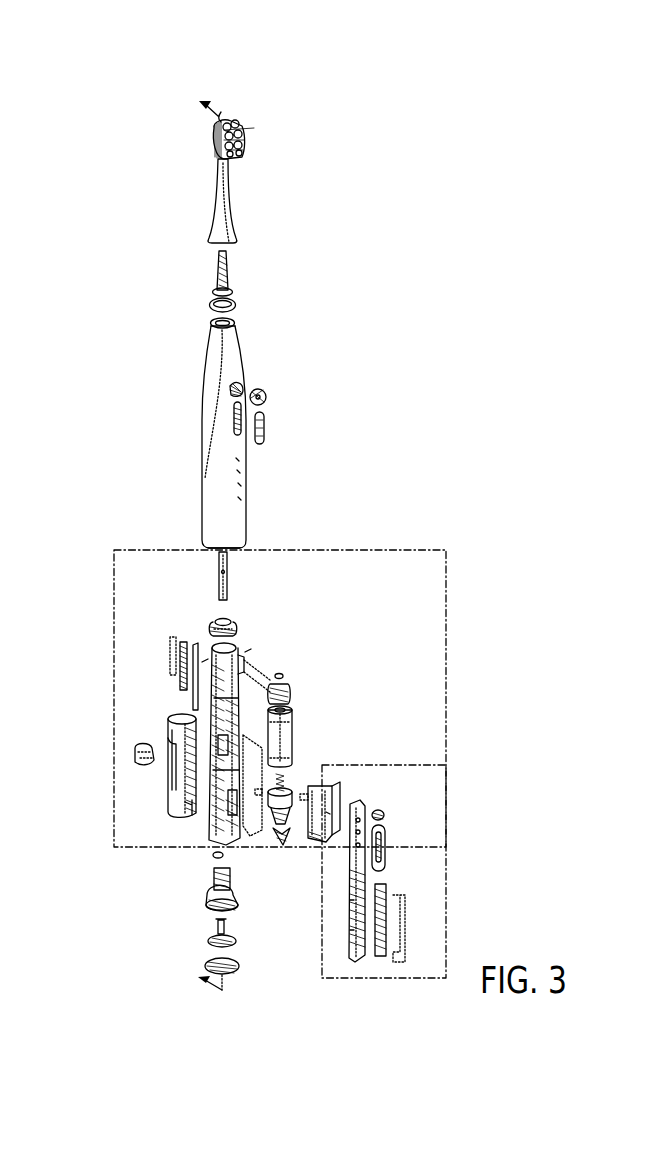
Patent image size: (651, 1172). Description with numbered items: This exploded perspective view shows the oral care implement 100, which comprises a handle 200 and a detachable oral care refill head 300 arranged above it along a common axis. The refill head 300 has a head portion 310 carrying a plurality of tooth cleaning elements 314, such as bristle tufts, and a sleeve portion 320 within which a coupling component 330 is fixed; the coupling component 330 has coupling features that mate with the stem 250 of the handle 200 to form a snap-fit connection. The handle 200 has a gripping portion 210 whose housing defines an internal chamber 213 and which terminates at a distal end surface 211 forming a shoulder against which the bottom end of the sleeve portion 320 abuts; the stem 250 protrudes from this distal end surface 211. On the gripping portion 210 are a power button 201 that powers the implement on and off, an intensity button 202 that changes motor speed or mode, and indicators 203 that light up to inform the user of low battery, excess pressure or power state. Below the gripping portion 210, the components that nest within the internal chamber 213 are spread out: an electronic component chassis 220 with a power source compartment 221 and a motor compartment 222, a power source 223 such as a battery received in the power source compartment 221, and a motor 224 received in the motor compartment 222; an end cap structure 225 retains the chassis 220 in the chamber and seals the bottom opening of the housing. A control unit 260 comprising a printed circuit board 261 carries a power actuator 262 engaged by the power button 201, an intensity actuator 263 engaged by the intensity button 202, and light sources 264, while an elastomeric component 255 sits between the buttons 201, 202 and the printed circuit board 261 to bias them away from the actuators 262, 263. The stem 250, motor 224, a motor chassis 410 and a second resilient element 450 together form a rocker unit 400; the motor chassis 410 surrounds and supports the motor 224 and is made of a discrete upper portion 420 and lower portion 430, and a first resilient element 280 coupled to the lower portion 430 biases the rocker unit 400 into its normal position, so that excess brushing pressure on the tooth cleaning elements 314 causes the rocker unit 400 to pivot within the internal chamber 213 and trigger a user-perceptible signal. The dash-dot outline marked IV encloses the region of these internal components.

The oral care implement 100 is at (416, 268).
The handle 200 is at (121, 467).
The power button 201 is at (266, 397).
The intensity button 202 is at (265, 430).
The indicators 203 is at (248, 468).
The gripping portion 210 is at (214, 410).
The distal end surface 211 is at (212, 470).
The internal chamber 213 is at (206, 549).
The electronic component chassis 220 is at (250, 713).
The power source compartment 221 is at (206, 785).
The motor compartment 222 is at (240, 663).
The power source 223 is at (176, 797).
The motor 224 is at (292, 737).
The end cap structure 225 is at (201, 920).
The stem 250 is at (232, 592).
The elastomeric component 255 is at (385, 853).
The control unit 260 is at (340, 935).
The printed circuit board 261 is at (356, 962).
The power actuator 262 is at (360, 803).
The intensity actuator 263 is at (348, 855).
The light sources 264 is at (369, 902).
The first resilient element 280 is at (280, 823).
The oral care refill head 300 is at (233, 182).
The head portion 310 is at (213, 138).
The tooth cleaning elements 314 is at (232, 129).
The sleeve portion 320 is at (222, 212).
The coupling component 330 is at (229, 276).
The rocker unit 400 is at (301, 714).
The motor chassis 410 is at (301, 687).
The upper portion 420 is at (280, 674).
The lower portion 430 is at (285, 808).
The second resilient element 450 is at (285, 772).
The section IV is at (446, 595).